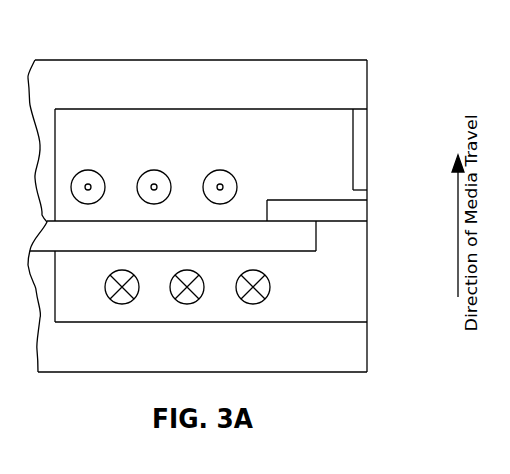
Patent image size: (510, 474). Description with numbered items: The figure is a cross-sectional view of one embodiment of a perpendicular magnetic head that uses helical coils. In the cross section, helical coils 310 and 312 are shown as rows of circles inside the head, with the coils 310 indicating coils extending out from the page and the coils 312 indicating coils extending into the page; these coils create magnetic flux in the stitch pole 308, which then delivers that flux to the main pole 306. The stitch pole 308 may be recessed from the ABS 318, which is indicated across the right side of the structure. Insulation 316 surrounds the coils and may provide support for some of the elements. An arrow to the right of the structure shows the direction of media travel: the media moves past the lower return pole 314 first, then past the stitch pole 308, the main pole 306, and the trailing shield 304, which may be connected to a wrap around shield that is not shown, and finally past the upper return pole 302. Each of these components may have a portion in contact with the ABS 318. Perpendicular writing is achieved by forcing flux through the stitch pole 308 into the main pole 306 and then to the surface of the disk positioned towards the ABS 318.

The upper return pole 302 is at (281, 93).
The trailing shield 304 is at (367, 153).
The main pole 306 is at (367, 207).
The stitch pole 308 is at (232, 246).
The helical coils 310 is at (86, 172).
The helical coils 312 is at (105, 291).
The lower return pole 314 is at (229, 356).
The insulation 316 is at (317, 165).
The ABS 318 is at (369, 77).